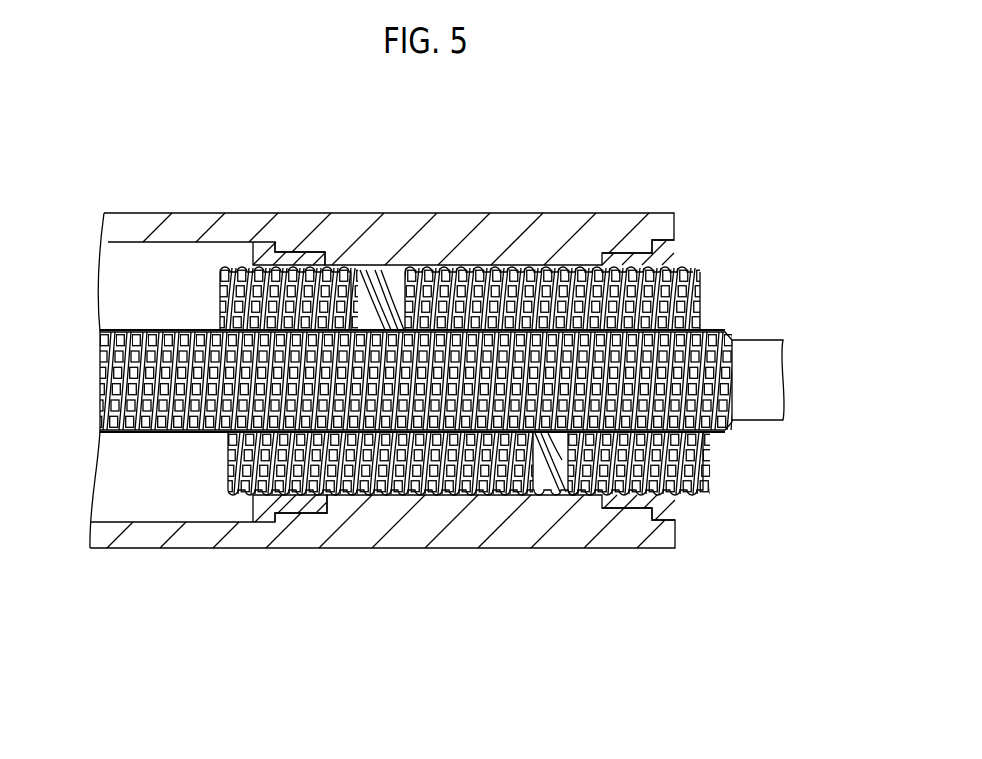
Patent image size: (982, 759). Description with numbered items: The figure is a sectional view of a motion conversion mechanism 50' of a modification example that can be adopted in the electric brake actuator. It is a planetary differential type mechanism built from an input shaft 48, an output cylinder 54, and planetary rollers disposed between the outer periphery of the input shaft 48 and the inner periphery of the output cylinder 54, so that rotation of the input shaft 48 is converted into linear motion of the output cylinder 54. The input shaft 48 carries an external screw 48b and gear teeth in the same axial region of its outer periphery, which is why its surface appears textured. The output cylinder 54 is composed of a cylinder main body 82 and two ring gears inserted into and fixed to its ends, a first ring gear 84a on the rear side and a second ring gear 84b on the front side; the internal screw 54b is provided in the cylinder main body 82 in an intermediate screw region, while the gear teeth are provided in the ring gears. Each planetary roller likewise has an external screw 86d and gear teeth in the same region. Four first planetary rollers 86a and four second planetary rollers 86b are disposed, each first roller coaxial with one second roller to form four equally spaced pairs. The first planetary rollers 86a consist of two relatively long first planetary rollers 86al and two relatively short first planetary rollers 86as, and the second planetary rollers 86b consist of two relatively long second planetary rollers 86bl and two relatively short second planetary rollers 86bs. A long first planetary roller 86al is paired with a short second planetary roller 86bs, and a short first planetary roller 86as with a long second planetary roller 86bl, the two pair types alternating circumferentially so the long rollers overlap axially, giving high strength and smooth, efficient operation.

The motion conversion mechanism 50' is at (457, 388).
The input shaft 48 is at (763, 412).
The external screw 48b is at (734, 334).
The output cylinder 54 is at (421, 205).
The internal screw 54b is at (547, 498).
The cylinder main body 82 is at (500, 222).
The first ring gear 84a is at (630, 258).
The second ring gear 84b is at (293, 257).
The first planetary rollers 86a is at (557, 373).
The relatively long first planetary roller 86al is at (564, 270).
The relatively short first planetary roller 86as is at (600, 498).
The second planetary rollers 86b is at (376, 379).
The relatively short second planetary roller 86bs is at (312, 268).
The relatively long second planetary roller 86bl is at (323, 494).
The external screw 86d is at (686, 272).